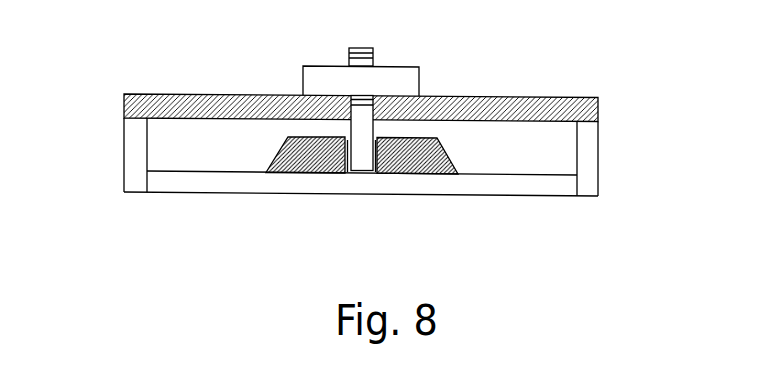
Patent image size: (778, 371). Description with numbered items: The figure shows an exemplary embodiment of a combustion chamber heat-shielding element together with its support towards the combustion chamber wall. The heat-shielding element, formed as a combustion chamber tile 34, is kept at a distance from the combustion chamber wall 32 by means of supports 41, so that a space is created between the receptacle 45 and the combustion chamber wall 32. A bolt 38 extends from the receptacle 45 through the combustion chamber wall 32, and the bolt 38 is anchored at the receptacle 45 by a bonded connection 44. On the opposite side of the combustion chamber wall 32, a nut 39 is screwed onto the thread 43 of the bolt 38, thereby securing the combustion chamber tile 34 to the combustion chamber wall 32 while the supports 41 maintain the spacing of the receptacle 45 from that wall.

The combustion chamber wall 32 is at (133, 108).
The combustion chamber tile 34 is at (350, 183).
The bolt 38 is at (357, 152).
The nut 39 is at (405, 85).
The support 41 is at (590, 160).
The thread 43 is at (373, 53).
The bonded connection 44 is at (380, 162).
The receptacle 45 is at (442, 162).